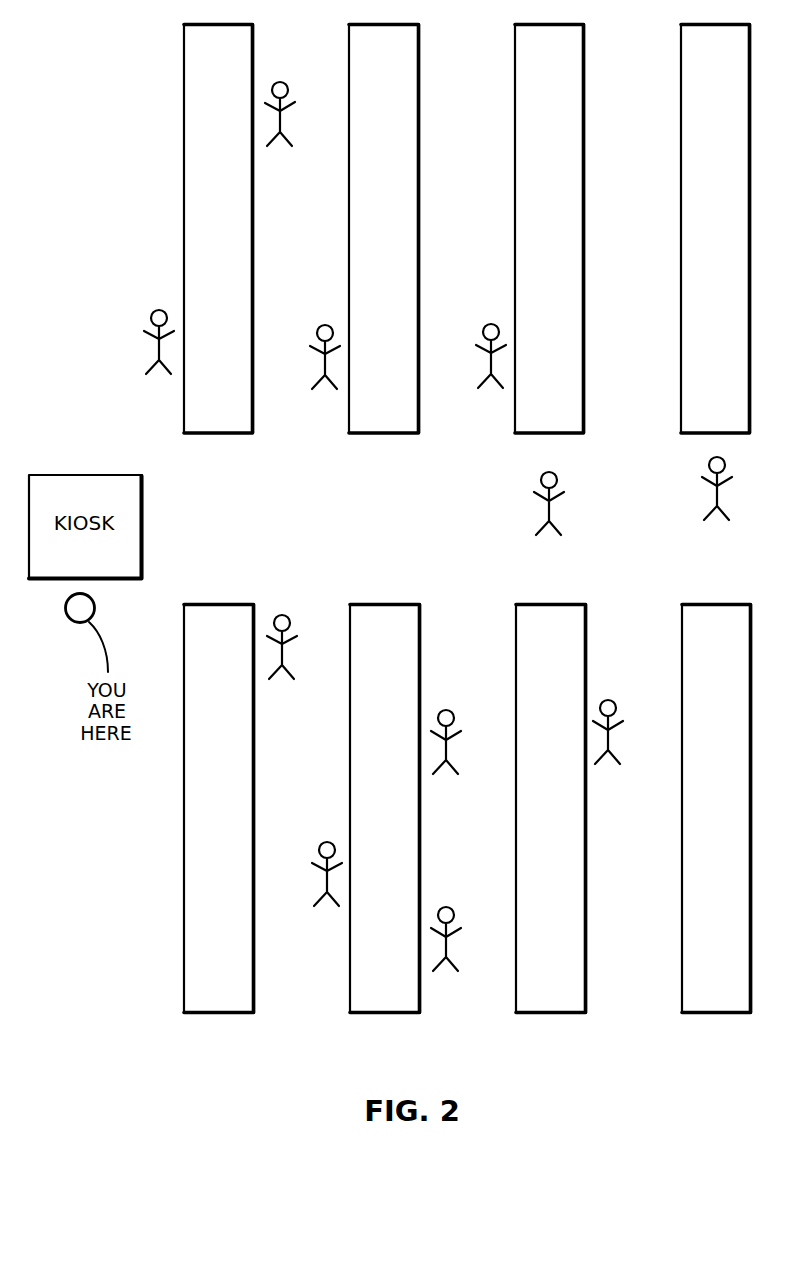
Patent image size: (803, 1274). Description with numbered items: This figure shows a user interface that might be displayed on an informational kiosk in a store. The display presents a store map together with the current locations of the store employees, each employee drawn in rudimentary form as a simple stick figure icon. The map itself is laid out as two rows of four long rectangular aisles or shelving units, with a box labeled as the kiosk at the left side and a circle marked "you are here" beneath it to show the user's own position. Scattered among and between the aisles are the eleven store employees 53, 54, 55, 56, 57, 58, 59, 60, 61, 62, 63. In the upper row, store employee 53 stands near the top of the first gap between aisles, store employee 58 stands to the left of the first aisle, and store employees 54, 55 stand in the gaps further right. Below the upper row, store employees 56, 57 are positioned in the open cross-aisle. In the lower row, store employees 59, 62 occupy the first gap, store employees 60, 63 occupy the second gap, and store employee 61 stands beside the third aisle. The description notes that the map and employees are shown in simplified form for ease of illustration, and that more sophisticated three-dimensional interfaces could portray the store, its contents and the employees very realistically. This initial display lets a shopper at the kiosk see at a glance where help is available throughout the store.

The store employee 53 is at (278, 80).
The store employee 54 is at (326, 323).
The store employee 55 is at (492, 322).
The store employee 56 is at (562, 478).
The store employee 57 is at (733, 462).
The store employee 58 is at (160, 308).
The store employee 59 is at (283, 612).
The store employee 60 is at (447, 707).
The store employee 61 is at (609, 697).
The store employee 62 is at (328, 840).
The store employee 63 is at (447, 904).